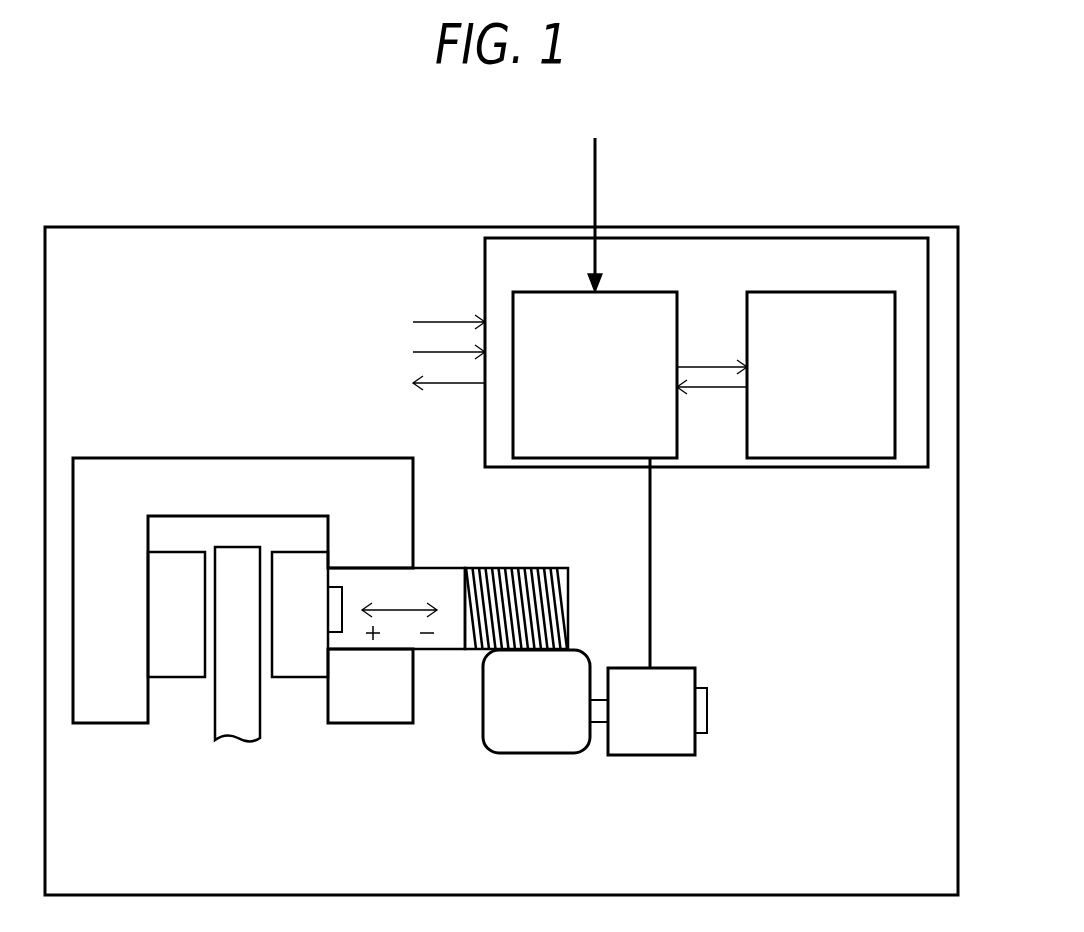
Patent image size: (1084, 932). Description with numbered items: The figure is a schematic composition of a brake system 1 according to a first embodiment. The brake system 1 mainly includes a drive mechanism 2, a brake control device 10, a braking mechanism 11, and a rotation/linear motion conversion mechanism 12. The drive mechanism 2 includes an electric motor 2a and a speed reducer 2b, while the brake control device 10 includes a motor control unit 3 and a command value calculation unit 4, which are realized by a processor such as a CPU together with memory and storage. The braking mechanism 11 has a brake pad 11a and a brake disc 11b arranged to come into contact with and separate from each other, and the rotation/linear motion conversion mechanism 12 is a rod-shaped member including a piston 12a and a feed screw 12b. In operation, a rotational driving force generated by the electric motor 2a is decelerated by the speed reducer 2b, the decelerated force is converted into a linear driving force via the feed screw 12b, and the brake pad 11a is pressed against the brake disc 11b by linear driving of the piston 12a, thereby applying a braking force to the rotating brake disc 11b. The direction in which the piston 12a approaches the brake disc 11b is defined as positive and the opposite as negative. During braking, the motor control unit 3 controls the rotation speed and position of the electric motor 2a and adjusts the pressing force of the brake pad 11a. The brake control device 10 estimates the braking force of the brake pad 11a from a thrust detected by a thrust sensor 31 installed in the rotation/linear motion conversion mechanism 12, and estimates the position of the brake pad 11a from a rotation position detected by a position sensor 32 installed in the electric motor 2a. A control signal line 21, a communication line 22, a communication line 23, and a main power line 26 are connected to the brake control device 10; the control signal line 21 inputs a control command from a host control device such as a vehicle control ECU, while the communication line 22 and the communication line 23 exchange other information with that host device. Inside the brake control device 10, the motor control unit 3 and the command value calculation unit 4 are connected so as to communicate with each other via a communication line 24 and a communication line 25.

The brake system 1 is at (385, 227).
The brake control device 10 is at (865, 238).
The motor control unit 3 is at (603, 462).
The command value calculation unit 4 is at (826, 460).
The drive mechanism 2 is at (589, 668).
The electric motor 2a is at (625, 755).
The speed reducer 2b is at (550, 755).
The braking mechanism 11 is at (243, 557).
The brake pad 11a is at (300, 552).
The brake disc 11b is at (238, 547).
The rotation/linear motion conversion mechanism 12 is at (448, 563).
The piston 12a is at (437, 568).
The feed screw 12b is at (513, 568).
The control signal line 21 is at (457, 322).
The communication line 22 is at (419, 352).
The communication line 23 is at (450, 388).
The communication line 24 is at (700, 362).
The communication line 25 is at (718, 390).
The main power line 26 is at (597, 195).
The thrust sensor 31 is at (342, 603).
The position sensor 32 is at (707, 712).